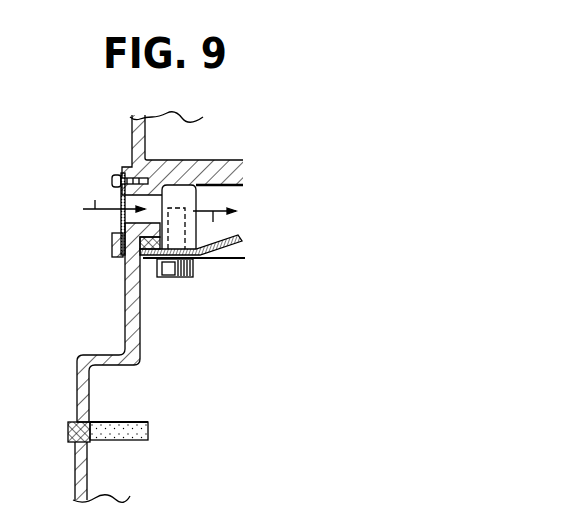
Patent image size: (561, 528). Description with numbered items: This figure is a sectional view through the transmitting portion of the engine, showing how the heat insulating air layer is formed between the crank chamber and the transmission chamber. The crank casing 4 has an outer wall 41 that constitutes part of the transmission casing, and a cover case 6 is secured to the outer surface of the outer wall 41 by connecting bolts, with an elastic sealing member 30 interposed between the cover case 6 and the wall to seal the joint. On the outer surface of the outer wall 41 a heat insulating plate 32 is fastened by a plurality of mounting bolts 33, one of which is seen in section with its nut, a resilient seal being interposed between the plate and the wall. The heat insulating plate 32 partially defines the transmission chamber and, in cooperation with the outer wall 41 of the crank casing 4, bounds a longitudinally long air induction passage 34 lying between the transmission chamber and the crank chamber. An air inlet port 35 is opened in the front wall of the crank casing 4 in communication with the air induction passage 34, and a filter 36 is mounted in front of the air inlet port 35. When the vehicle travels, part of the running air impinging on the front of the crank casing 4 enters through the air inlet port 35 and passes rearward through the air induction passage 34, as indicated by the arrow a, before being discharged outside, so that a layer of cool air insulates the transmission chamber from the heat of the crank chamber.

The crank casing 4 is at (132, 148).
The cover case 6 is at (74, 465).
The elastic sealing member 30 is at (90, 420).
The heat insulating plate 32 is at (227, 249).
The mounting bolt 33 is at (177, 278).
The air induction passage 34 is at (227, 228).
The air inlet port 35 is at (151, 197).
The filter 36 is at (120, 220).
The outer wall 41 is at (125, 322).
The arrow a is at (159, 208).